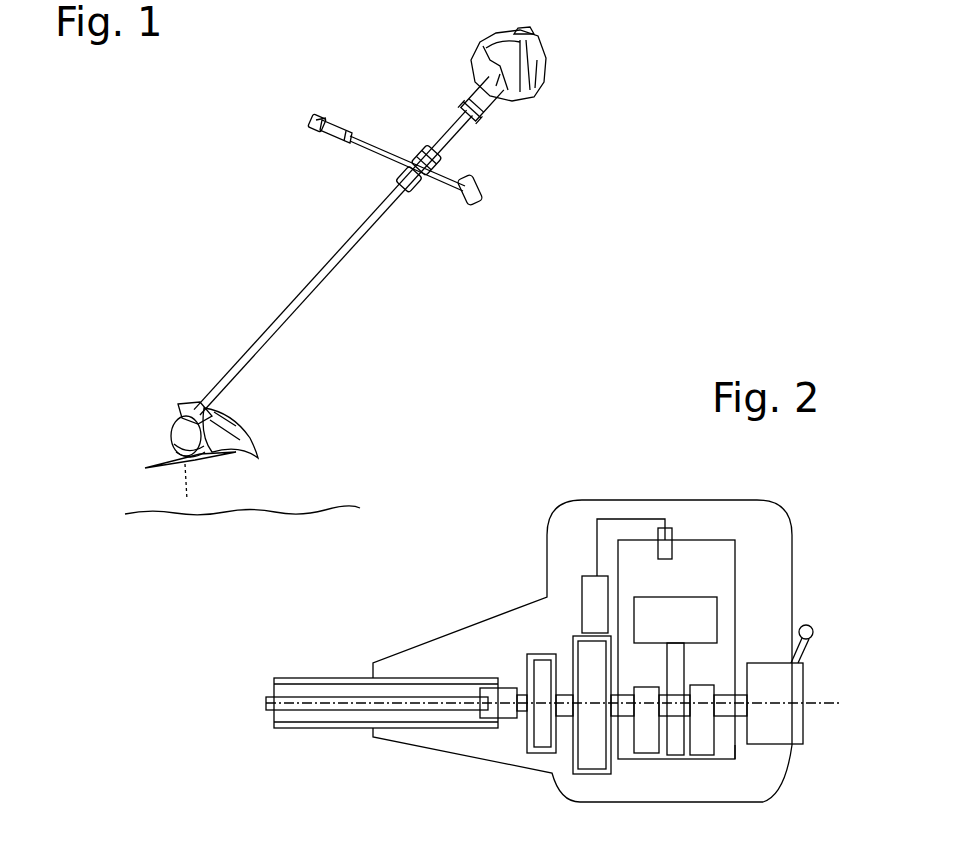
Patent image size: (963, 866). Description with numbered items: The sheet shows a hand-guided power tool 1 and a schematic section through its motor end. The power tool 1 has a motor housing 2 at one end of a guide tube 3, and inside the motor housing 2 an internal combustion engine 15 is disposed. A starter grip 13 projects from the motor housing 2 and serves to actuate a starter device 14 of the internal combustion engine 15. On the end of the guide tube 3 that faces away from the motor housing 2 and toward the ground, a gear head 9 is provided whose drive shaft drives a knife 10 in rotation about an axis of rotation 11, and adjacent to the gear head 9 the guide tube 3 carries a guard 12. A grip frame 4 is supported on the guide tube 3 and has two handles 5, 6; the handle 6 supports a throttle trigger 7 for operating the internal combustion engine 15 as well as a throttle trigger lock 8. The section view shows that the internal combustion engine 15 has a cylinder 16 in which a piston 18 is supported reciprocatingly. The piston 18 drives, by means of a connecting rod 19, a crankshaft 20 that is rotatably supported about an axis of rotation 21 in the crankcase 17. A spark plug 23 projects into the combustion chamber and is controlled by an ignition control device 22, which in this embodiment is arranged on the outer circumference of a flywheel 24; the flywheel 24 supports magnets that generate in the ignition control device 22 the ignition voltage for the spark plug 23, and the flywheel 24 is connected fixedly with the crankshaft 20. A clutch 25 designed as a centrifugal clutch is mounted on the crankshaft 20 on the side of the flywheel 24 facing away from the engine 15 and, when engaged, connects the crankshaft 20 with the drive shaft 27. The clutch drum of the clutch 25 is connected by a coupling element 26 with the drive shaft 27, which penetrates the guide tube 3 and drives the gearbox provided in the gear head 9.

In FIG. 1, the power tool 1 is at (150, 124).
In FIG. 1, the motor housing 2 is at (474, 58).
In FIG. 2, the motor housing 2 is at (740, 500).
In FIG. 1, the guide tube 3 is at (312, 293).
In FIG. 2, the guide tube 3 is at (296, 678).
In FIG. 1, the grip frame 4 is at (438, 186).
In FIG. 1, the handle 5 is at (480, 192).
In FIG. 1, the handle 6 is at (340, 136).
In FIG. 1, the throttle trigger 7 is at (318, 132).
In FIG. 1, the throttle trigger lock 8 is at (334, 123).
In FIG. 1, the gear head 9 is at (172, 441).
In FIG. 1, the knife 10 is at (150, 466).
In FIG. 1, the axis of rotation 11 is at (180, 408).
In FIG. 1, the guard 12 is at (246, 438).
In FIG. 1, the starter grip 13 is at (535, 32).
In FIG. 2, the starter grip 13 is at (814, 634).
In FIG. 2, the starter device 14 is at (793, 683).
In FIG. 2, the internal combustion engine 15 is at (745, 570).
In FIG. 2, the cylinder 16 is at (735, 560).
In FIG. 2, the crankcase 17 is at (733, 745).
In FIG. 2, the piston 18 is at (708, 618).
In FIG. 2, the connecting rod 19 is at (677, 690).
In FIG. 2, the crankshaft 20 is at (628, 712).
In FIG. 2, the axis of rotation 21 is at (782, 705).
In FIG. 2, the ignition control device 22 is at (593, 598).
In FIG. 2, the spark plug 23 is at (667, 548).
In FIG. 2, the flywheel 24 is at (585, 760).
In FIG. 2, the clutch 25 is at (529, 757).
In FIG. 2, the coupling element 26 is at (492, 698).
In FIG. 2, the drive shaft 27 is at (340, 700).